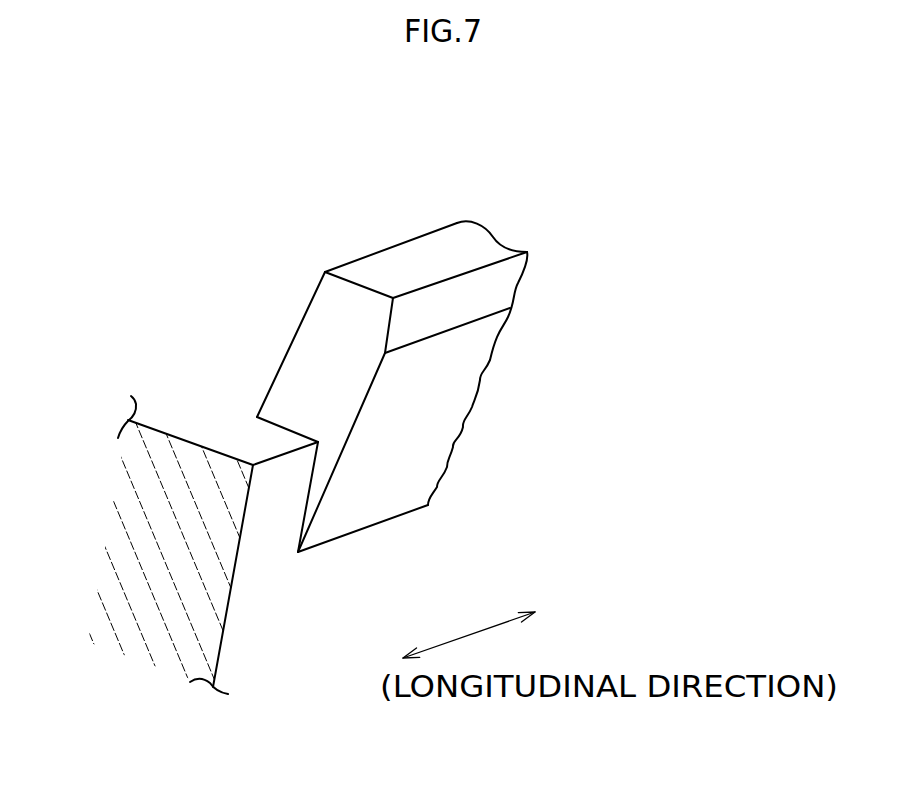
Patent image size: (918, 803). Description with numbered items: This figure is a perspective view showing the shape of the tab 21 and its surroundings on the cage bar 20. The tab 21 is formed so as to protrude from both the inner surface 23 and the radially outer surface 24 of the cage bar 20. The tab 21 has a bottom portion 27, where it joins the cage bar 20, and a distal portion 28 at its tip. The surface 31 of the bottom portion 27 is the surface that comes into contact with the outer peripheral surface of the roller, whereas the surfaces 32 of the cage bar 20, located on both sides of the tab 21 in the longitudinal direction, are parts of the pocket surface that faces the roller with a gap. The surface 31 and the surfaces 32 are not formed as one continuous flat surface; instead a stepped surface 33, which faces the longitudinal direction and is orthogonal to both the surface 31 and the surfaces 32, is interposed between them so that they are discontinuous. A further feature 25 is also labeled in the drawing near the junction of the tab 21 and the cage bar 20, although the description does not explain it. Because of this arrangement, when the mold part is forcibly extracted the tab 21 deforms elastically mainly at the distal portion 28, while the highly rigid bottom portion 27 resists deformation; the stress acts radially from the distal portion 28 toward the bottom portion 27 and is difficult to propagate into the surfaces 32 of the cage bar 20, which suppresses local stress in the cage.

The cage bar 20 is at (198, 503).
The tab 21 is at (437, 350).
The inner surface 23 is at (262, 572).
The radially outer surface 24 is at (202, 428).
The gap between wall and block 25 is at (268, 520).
The bottom portion 27 is at (383, 492).
The distal portion 28 is at (463, 347).
The surface of the bottom portion 31 is at (352, 503).
The surfaces of the cage bar 32 is at (278, 478).
The stepped surface 33 is at (327, 490).